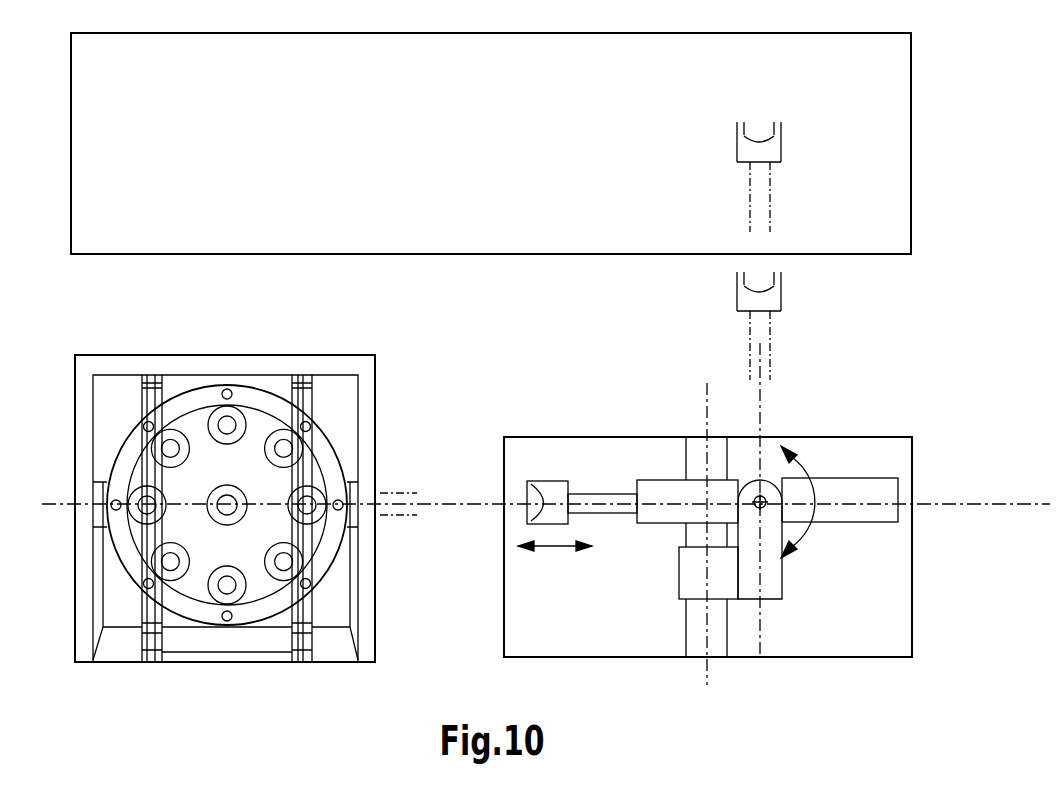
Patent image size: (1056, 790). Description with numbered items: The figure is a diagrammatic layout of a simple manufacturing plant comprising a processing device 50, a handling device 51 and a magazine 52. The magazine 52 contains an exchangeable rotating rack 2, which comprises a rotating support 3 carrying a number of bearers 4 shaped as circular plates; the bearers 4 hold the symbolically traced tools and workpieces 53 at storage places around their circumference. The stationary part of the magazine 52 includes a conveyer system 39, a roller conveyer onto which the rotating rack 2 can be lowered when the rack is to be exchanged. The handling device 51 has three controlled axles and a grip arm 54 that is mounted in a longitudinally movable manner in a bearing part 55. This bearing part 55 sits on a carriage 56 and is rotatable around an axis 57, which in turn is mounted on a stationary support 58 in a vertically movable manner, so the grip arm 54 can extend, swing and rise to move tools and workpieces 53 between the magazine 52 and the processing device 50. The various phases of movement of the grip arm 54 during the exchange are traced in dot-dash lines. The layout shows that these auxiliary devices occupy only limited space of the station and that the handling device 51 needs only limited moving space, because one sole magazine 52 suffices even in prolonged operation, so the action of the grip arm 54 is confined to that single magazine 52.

The processing device 50 is at (883, 151).
The handling device 51 is at (905, 566).
The magazine 52 is at (371, 589).
The rotating rack 2 is at (340, 435).
The rotating support 3 is at (227, 510).
The bearer 4 is at (195, 423).
The tools and workpieces 53 is at (280, 447).
The conveyer system 39 is at (307, 652).
The grip arm 54 is at (606, 492).
The bearing part 55 is at (872, 487).
The carriage 56 is at (745, 587).
The axis 57 is at (765, 498).
The stationary support 58 is at (692, 577).